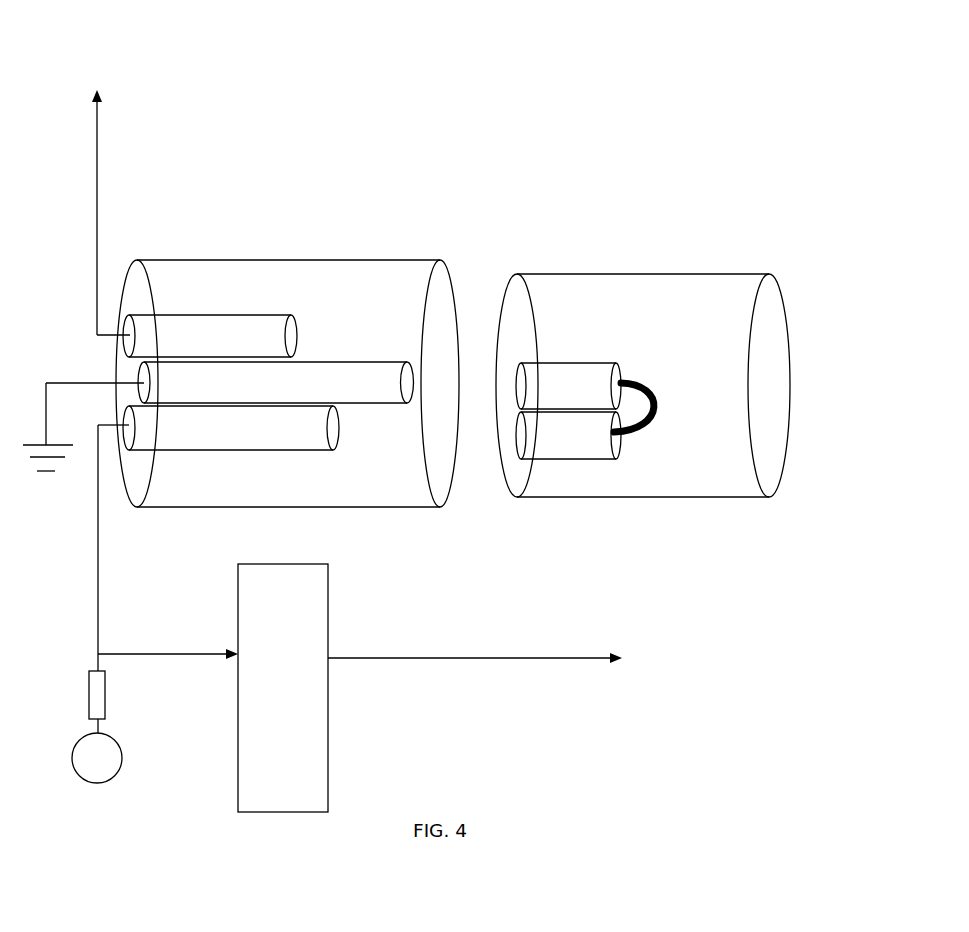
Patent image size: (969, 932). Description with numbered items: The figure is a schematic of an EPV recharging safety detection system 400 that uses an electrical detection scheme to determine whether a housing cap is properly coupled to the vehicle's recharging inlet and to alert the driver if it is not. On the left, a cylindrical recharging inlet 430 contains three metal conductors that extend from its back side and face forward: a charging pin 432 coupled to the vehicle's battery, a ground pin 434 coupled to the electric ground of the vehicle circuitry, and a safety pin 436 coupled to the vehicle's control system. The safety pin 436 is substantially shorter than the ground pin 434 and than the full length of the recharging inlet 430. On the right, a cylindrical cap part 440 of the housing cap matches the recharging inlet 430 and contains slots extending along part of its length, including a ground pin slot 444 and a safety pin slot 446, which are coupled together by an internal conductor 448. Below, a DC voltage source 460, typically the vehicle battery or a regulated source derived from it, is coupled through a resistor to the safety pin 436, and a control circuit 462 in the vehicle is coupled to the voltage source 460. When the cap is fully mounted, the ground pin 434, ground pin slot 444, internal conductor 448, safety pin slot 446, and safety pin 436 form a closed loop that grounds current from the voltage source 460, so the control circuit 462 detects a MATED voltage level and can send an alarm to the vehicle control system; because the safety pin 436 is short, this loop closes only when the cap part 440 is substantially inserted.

The EPV recharging safety detection system 400 is at (616, 121).
The recharging inlet 430 is at (238, 260).
The charging pin 432 is at (252, 316).
The ground pin 434 is at (335, 361).
The safety pin 436 is at (207, 450).
The cap part 440 is at (575, 274).
The ground pin slot 444 is at (523, 387).
The safety pin slot 446 is at (522, 433).
The internal conductor 448 is at (657, 412).
The DC voltage source 460 is at (95, 785).
The control circuit 462 is at (330, 617).